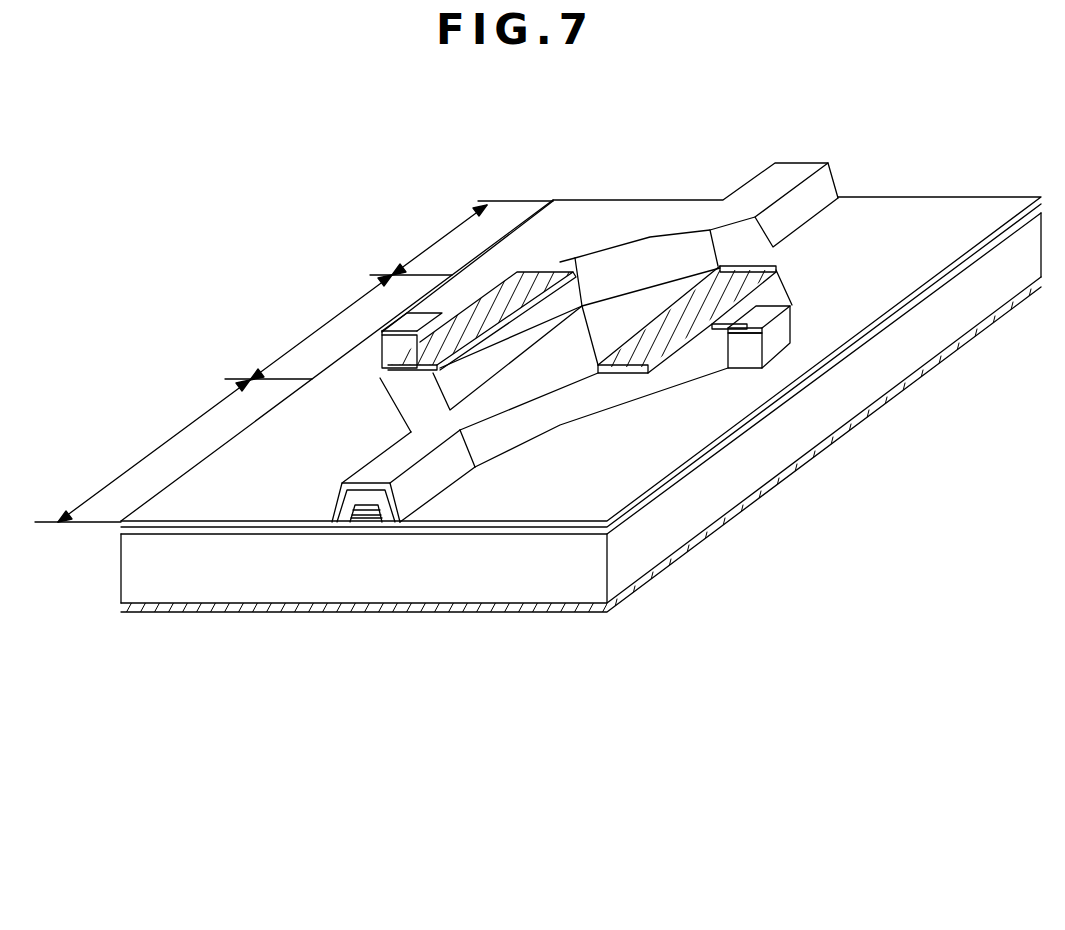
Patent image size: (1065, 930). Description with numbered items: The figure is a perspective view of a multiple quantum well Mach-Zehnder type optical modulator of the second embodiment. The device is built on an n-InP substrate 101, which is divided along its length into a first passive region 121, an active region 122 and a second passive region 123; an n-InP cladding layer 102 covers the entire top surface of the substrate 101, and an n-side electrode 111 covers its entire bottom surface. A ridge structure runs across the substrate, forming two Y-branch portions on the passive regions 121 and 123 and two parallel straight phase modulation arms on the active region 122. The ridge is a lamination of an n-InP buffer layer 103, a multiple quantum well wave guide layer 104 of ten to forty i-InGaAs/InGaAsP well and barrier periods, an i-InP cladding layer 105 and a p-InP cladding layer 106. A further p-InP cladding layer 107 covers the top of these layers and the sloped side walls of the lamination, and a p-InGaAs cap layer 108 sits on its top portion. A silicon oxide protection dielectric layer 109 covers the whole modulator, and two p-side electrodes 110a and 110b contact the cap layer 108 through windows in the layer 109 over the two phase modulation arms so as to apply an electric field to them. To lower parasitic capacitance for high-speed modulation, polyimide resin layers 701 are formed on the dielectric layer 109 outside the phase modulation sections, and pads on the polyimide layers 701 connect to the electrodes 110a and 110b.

The n-InP substrate 101 is at (581, 437).
The n-InP cladding layer 102 is at (581, 448).
The n-InP buffer layer 103 is at (441, 614).
The multiple quantum well wave guide layer 104 is at (423, 632).
The i-InP cladding layer 105 is at (404, 650).
The p-InP cladding layer 106 is at (385, 665).
The p-InP cladding layer 107 is at (315, 598).
The p-InGaAs cap layer 108 is at (264, 578).
The silicon oxide film protection dielectric layer 109 is at (581, 307).
The p-side electrode 110a is at (613, 229).
The p-side electrode 110b is at (719, 240).
The n-side electrode 111 is at (581, 445).
The passive region 121 is at (173, 450).
The active region 122 is at (351, 327).
The passive region 123 is at (467, 238).
The polyimide resin layer 701 is at (830, 379).